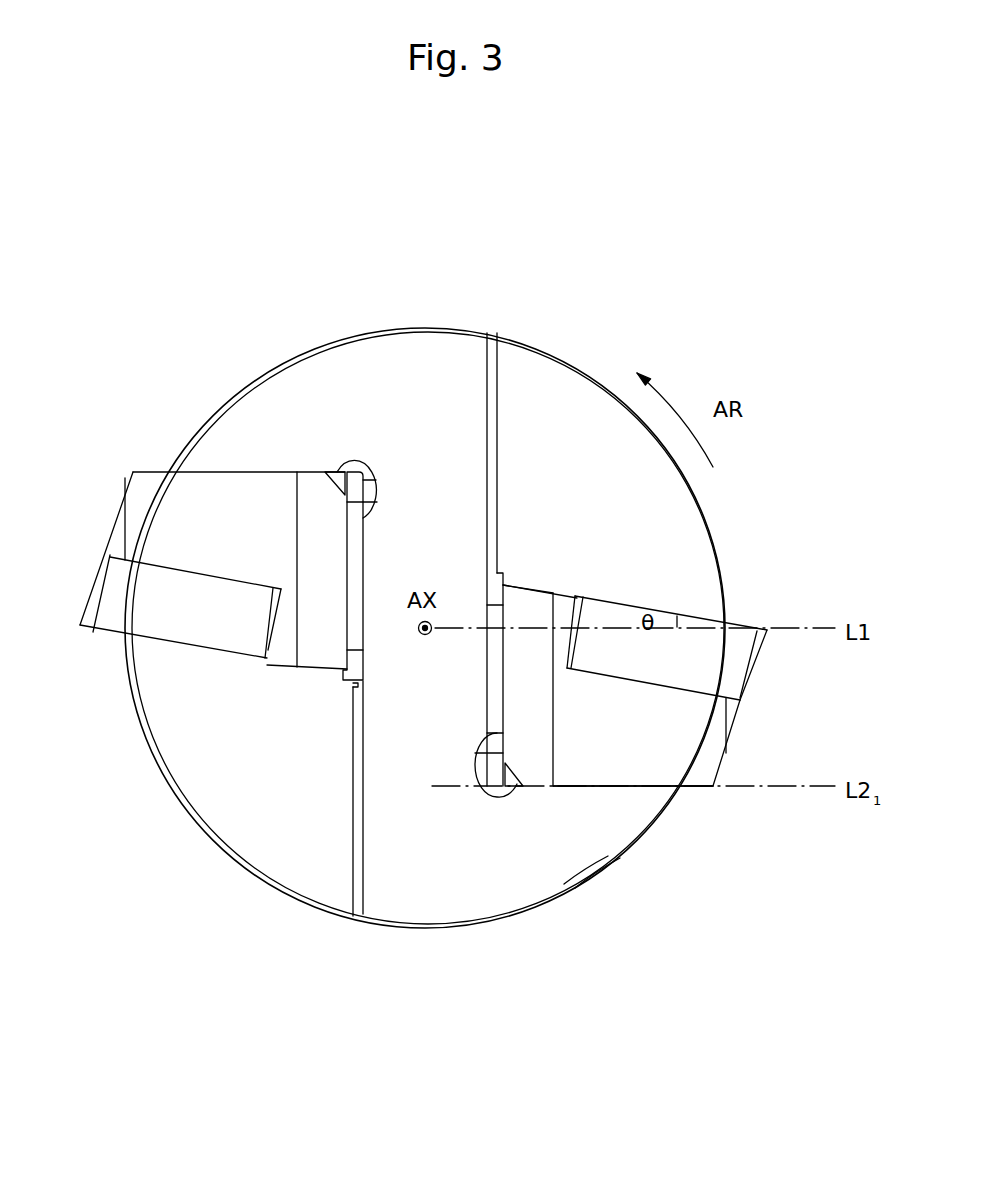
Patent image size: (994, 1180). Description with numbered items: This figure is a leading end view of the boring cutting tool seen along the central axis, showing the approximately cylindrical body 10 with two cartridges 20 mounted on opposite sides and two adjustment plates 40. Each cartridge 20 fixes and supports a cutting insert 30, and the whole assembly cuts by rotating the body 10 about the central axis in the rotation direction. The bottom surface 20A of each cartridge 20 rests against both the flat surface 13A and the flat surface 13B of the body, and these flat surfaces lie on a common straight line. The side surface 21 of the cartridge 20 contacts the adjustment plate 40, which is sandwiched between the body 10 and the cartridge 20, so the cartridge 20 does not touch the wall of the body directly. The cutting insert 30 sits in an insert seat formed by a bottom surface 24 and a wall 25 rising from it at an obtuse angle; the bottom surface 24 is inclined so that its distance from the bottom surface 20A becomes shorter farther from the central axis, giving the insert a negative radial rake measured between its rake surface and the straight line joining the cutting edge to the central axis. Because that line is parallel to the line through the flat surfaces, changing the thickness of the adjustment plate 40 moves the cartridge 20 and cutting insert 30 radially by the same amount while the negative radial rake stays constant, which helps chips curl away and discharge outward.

The body 10 is at (458, 416).
The flat surface 13A is at (583, 788).
The flat surface 13B is at (583, 788).
The cartridge 20 is at (192, 525).
The bottom surface 20A is at (615, 787).
The side surface 21 is at (503, 617).
The bottom surface 24 is at (673, 690).
The wall 25 is at (572, 613).
The cutting insert 30 is at (207, 623).
The adjustment plate 40 is at (355, 558).